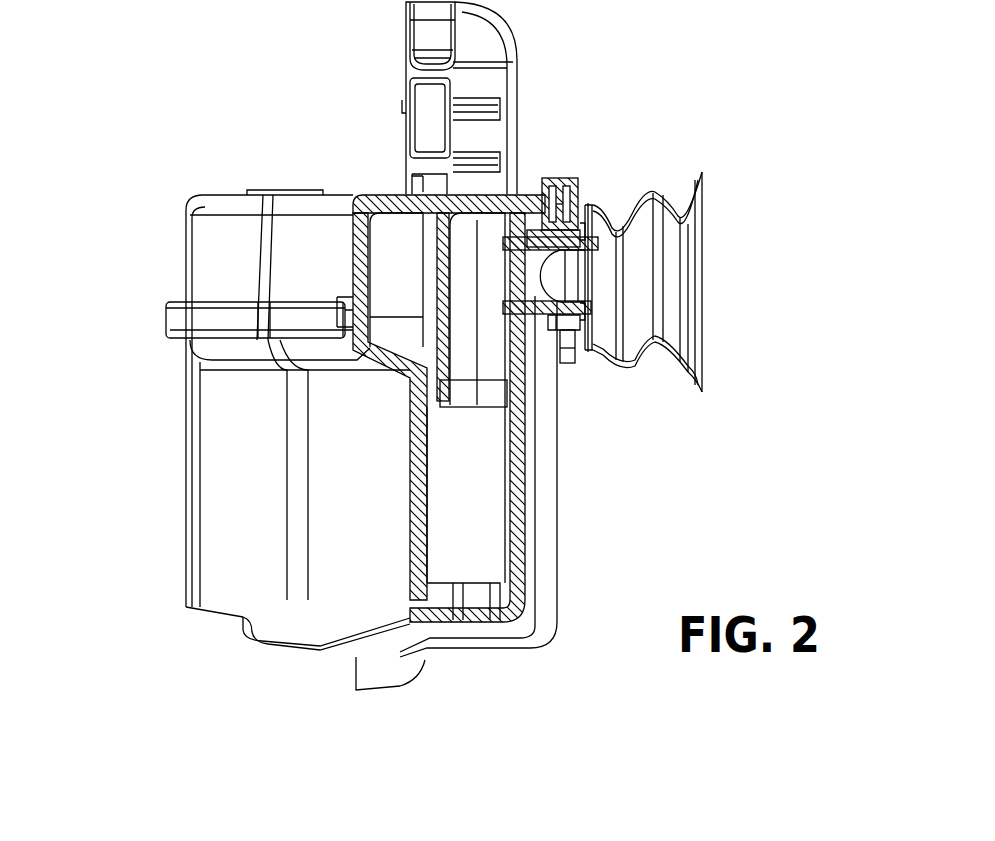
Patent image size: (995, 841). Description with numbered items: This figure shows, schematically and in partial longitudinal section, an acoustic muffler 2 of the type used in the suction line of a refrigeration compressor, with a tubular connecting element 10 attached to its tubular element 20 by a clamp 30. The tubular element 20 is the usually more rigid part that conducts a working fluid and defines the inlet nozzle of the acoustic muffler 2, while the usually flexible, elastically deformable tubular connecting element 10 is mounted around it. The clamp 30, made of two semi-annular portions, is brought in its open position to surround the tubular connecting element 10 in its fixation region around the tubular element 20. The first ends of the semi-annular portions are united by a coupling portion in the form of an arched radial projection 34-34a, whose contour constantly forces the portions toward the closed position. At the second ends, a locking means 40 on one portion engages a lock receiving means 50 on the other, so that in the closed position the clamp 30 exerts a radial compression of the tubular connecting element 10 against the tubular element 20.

The acoustic muffler 2 is at (382, 346).
The tubular connecting element 10 is at (706, 168).
The tubular element 20 is at (528, 296).
The clamp 30 is at (585, 353).
The coupling portion / arched radial projection 34-34a is at (577, 365).
The locking means 40 is at (582, 188).
The lock receiving means 50 is at (538, 186).